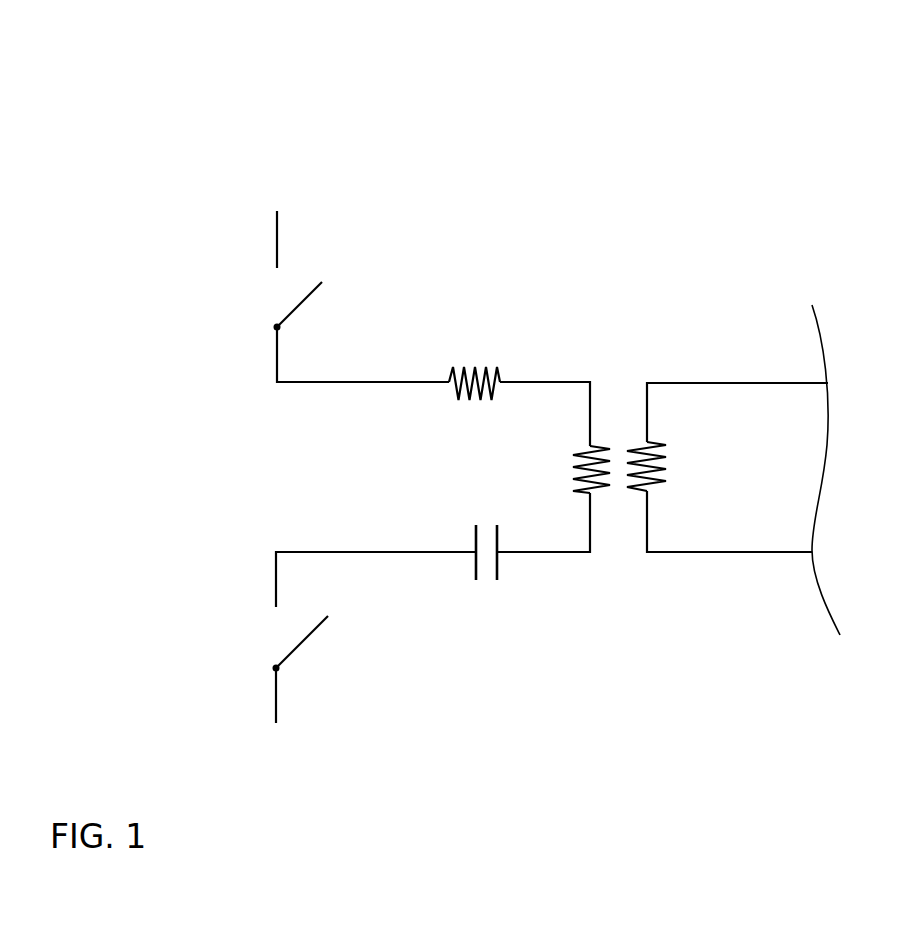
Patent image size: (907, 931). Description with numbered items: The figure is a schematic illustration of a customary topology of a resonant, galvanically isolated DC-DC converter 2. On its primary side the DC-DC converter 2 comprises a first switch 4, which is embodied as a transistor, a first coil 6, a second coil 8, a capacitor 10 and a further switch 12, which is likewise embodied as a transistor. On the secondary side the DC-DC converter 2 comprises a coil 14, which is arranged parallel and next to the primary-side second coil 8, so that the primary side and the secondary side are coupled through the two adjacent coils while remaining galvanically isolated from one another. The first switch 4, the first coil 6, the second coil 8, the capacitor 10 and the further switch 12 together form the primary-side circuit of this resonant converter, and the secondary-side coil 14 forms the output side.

The DC-DC converter 2 is at (558, 332).
The first switch 4 is at (216, 271).
The first coil 6 is at (500, 312).
The second coil 8 is at (521, 463).
The capacitor 10 is at (479, 625).
The further switch 12 is at (214, 669).
The coil 14 is at (716, 466).